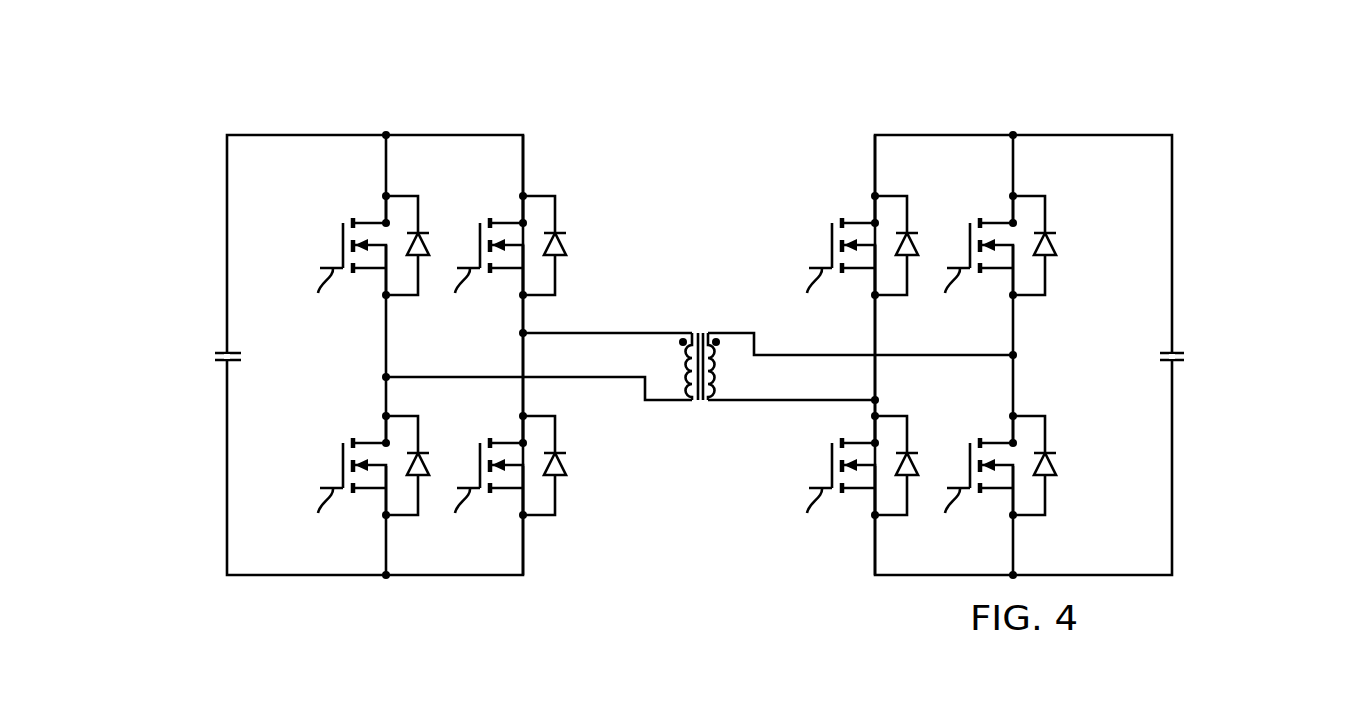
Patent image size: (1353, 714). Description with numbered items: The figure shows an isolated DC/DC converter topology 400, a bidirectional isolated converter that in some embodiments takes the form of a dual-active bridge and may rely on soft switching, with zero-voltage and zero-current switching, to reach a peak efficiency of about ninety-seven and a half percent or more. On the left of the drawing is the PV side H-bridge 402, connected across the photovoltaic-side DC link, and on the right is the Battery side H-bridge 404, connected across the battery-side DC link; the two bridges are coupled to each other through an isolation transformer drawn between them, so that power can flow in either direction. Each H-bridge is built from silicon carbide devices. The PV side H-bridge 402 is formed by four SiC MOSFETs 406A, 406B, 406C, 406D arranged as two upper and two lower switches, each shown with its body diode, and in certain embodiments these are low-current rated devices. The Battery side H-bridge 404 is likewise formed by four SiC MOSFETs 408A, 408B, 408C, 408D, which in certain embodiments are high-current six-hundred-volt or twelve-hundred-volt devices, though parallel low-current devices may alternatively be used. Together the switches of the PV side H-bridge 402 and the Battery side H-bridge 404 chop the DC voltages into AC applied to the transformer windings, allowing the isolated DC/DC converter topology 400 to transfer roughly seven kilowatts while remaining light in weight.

The isolated DC/DC converter topology 400 is at (566, 60).
The PV side H-bridge 402 is at (219, 201).
The Battery side H-bridge 404 is at (1183, 201).
The SiC MOSFET 406A is at (359, 258).
The SiC MOSFET 406B is at (496, 258).
The SiC MOSFET 406C is at (359, 477).
The SiC MOSFET 406D is at (496, 477).
The SiC MOSFET 408A is at (849, 258).
The SiC MOSFET 408B is at (986, 258).
The SiC MOSFET 408C is at (849, 477).
The SiC MOSFET 408D is at (986, 477).